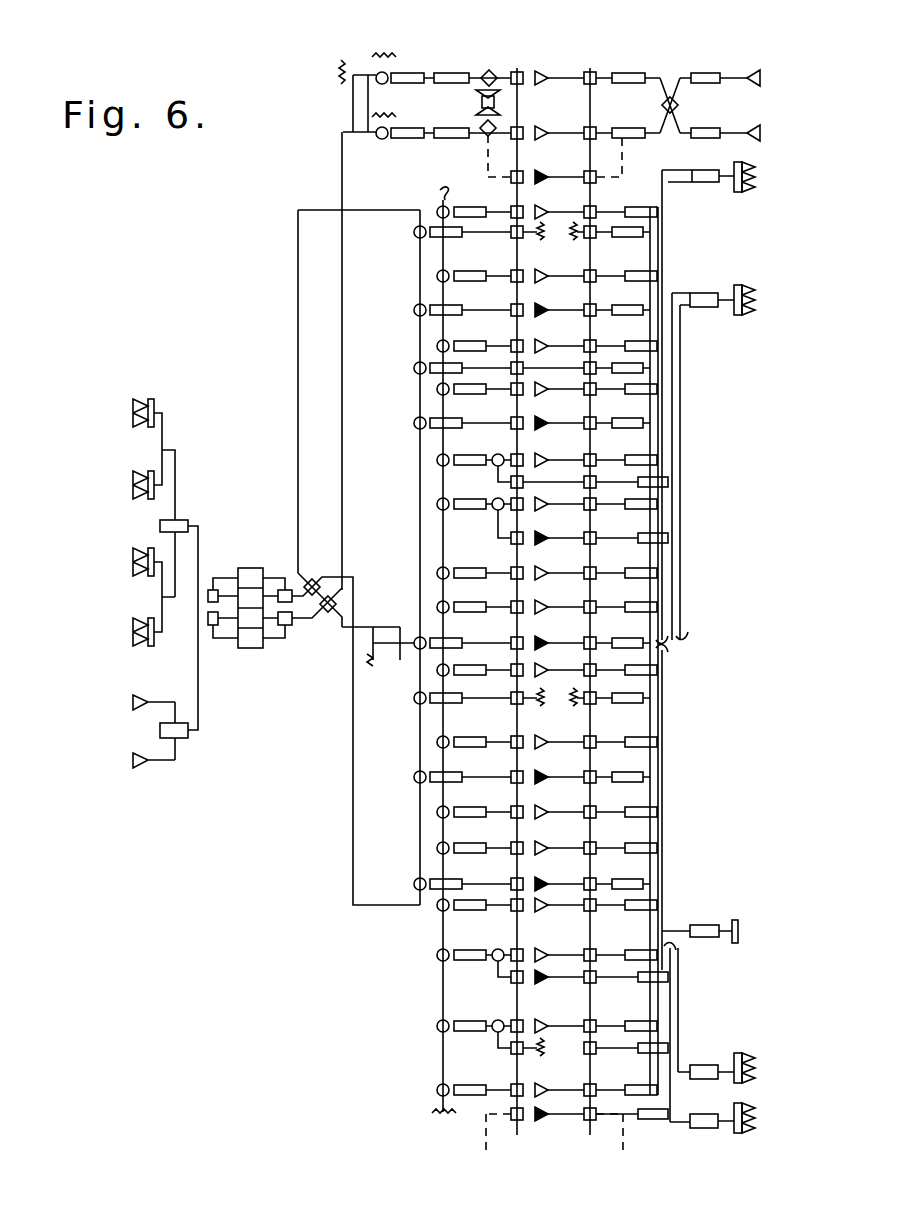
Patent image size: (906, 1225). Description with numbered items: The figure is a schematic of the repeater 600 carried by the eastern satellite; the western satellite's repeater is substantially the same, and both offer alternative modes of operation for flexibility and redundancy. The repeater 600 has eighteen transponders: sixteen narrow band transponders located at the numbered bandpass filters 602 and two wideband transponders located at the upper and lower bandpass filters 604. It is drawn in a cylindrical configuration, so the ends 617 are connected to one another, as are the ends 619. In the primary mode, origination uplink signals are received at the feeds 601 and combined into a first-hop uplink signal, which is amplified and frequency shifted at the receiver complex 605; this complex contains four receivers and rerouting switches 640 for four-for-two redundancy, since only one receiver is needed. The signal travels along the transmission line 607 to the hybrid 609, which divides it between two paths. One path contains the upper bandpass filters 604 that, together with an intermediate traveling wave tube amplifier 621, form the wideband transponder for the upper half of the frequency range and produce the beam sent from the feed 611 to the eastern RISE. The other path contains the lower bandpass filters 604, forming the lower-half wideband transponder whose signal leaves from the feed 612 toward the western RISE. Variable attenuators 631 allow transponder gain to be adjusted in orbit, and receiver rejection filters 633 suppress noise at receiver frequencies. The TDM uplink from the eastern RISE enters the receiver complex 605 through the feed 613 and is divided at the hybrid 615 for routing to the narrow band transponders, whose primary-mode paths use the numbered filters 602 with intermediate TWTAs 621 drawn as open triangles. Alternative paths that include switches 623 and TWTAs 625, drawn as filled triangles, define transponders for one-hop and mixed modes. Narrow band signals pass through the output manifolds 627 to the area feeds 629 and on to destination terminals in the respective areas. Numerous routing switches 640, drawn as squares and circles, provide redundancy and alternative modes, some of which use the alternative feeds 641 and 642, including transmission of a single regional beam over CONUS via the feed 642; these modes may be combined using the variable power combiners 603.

The repeater 600 is at (130, 254).
The feeds 601 is at (158, 470).
The bandpass filters 602 is at (470, 560).
The variable power combiners 603 is at (182, 520).
The bandpass filters 604 is at (409, 72).
The receiver complex 605 is at (250, 648).
The transmission line 607 is at (343, 193).
The hybrid 609 is at (353, 110).
The feed 611 is at (751, 72).
The feed 612 is at (751, 127).
The feed 613 is at (140, 696).
The hybrid 615 is at (378, 630).
The ends 617 is at (497, 55).
The ends 619 is at (590, 50).
The intermediate traveling wave tube amplifiers 621 is at (542, 70).
The switches 623 is at (418, 422).
The TWTAs 625 is at (545, 752).
The output manifolds 627 is at (666, 228).
The area feeds 629 is at (740, 286).
The variable attenuators 631 is at (455, 73).
The receiver rejection filters 633 is at (698, 73).
The routing switches 640 is at (482, 136).
The alternative feed 641 is at (140, 770).
The alternative feed 642 is at (133, 562).